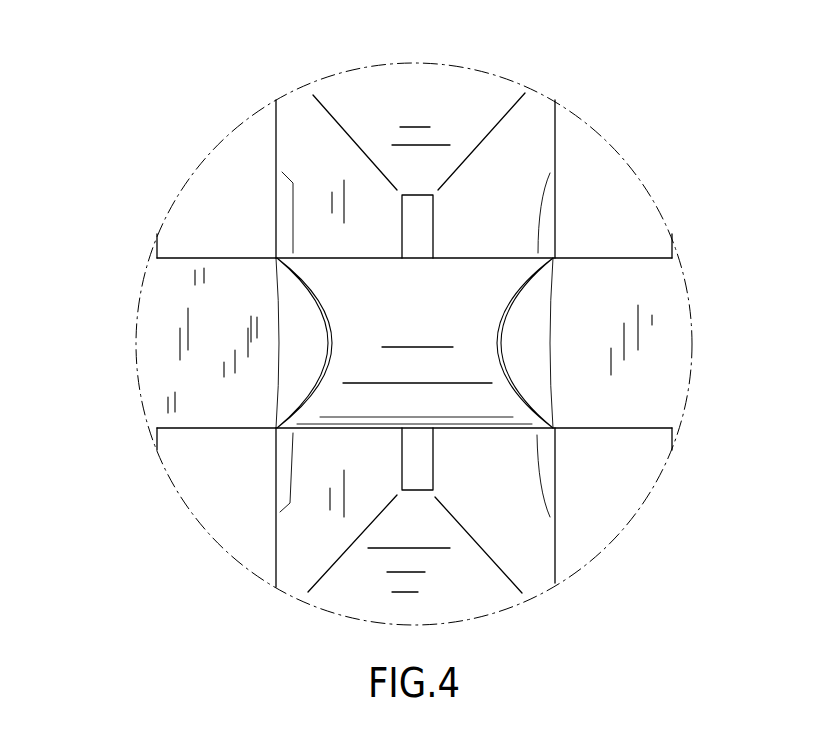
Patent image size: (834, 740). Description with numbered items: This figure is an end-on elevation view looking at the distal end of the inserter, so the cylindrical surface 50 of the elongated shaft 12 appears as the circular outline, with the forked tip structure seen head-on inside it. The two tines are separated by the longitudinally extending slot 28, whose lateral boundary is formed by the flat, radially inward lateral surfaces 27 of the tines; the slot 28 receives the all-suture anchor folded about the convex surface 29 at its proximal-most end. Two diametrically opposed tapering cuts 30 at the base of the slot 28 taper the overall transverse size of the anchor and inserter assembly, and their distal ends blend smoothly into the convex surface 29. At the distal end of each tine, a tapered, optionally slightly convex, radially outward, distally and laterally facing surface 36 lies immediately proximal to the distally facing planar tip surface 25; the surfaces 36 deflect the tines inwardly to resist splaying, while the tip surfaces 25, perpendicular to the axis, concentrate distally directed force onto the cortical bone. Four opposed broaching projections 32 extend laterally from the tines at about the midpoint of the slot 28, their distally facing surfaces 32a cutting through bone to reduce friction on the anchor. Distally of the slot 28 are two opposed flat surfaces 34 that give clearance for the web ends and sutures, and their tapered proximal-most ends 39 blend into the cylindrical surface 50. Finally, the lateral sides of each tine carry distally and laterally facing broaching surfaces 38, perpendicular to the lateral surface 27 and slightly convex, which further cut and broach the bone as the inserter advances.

The elongated shaft 12 is at (385, 62).
The distally facing planar tip surface 25 is at (422, 241).
The lateral surface 27 is at (322, 262).
The longitudinally extending slot 28 is at (670, 342).
The convex surface 29 is at (478, 295).
The tapering cut 30 is at (290, 386).
The broaching projection 32 is at (230, 148).
The distally facing surface 32a is at (215, 198).
The flat surface 34 is at (555, 533).
The tapered radially outward surface 36 is at (455, 115).
The broaching surface 38 is at (311, 118).
The proximal-most end 39 is at (162, 273).
The cylindrical surface 50 is at (455, 63).